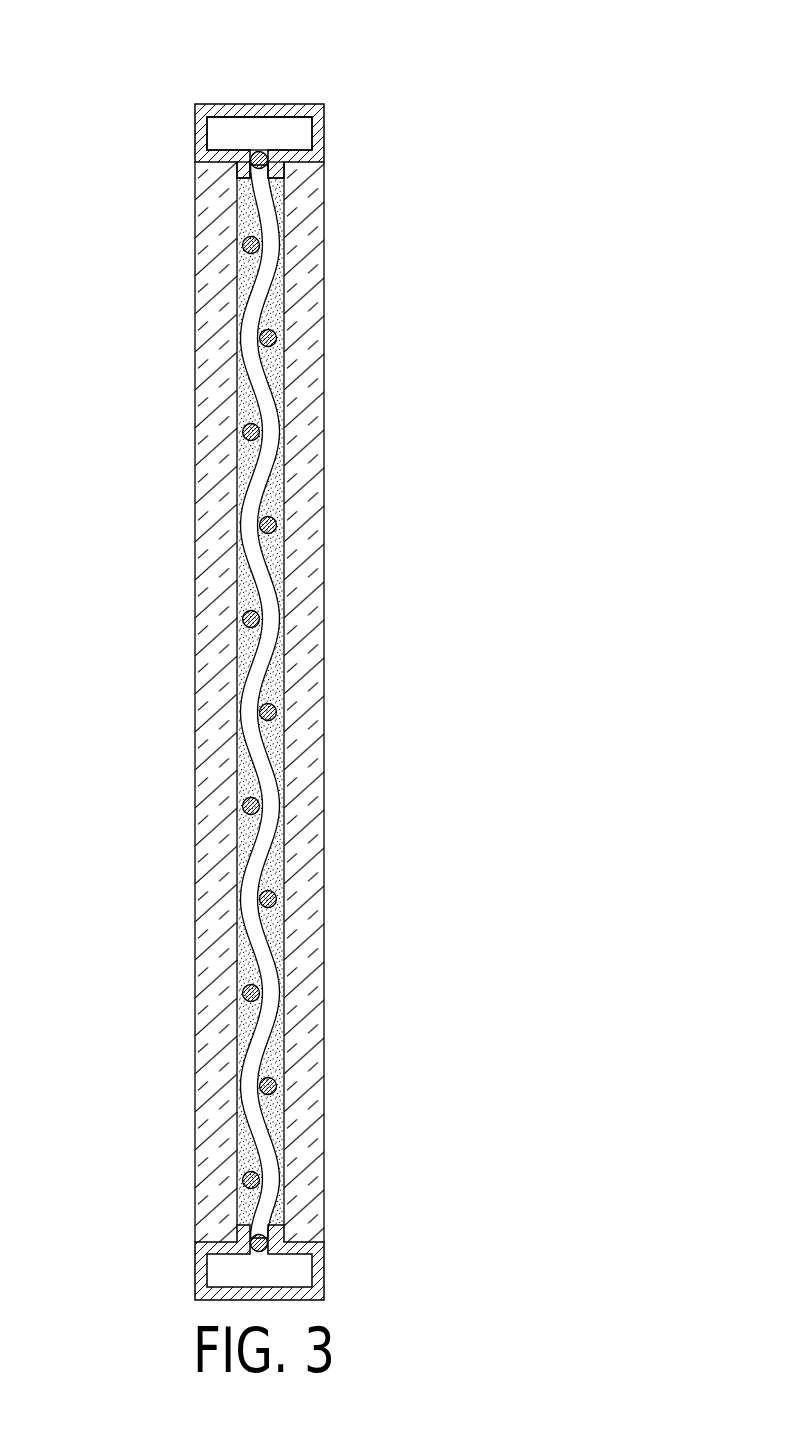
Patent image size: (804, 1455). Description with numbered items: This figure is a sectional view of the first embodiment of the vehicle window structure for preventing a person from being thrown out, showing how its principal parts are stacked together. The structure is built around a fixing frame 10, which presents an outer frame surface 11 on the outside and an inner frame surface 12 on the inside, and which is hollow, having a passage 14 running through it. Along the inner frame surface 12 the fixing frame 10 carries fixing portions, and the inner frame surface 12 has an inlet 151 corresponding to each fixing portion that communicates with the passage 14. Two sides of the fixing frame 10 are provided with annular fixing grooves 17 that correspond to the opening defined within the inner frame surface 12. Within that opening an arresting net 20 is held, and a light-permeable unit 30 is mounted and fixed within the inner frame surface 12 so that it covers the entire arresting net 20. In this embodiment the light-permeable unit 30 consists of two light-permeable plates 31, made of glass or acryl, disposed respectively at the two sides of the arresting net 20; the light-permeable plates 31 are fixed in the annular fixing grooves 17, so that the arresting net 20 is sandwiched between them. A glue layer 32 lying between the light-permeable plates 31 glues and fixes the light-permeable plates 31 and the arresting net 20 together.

The fixing frame 10 is at (244, 650).
The outer frame surface 11 is at (302, 104).
The inner frame surface 12 is at (283, 187).
The passage 14 is at (295, 135).
The annular fixing grooves 17 is at (232, 173).
The inlet 151 is at (240, 185).
The arresting net 20 is at (284, 289).
The light-permeable unit 30 is at (259, 702).
The light-permeable plates 31 is at (313, 443).
The glue layer 32 is at (267, 502).